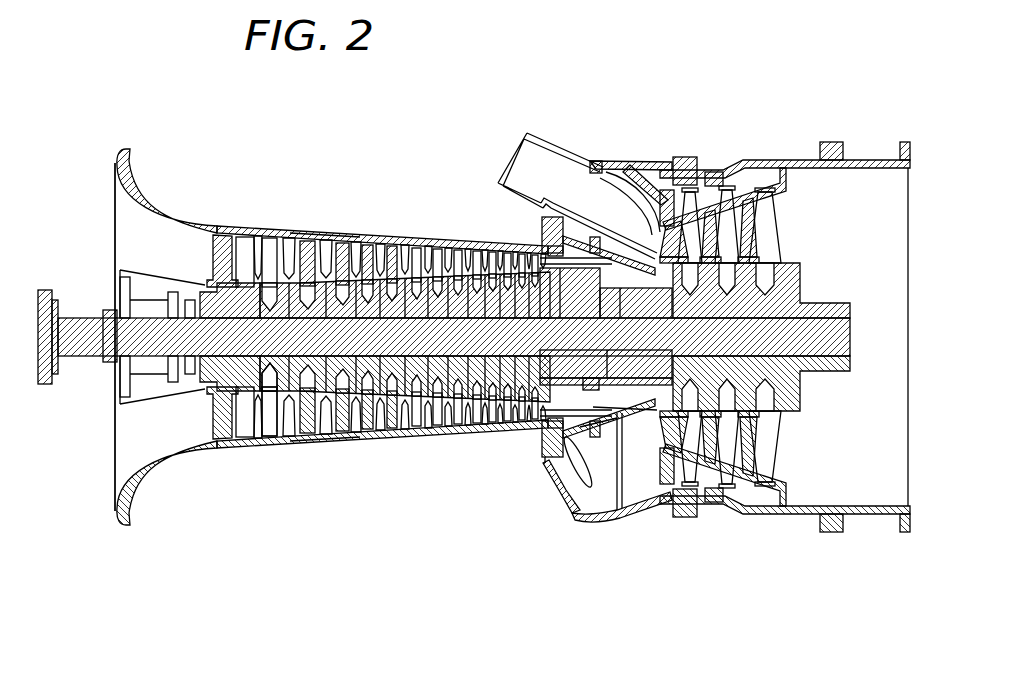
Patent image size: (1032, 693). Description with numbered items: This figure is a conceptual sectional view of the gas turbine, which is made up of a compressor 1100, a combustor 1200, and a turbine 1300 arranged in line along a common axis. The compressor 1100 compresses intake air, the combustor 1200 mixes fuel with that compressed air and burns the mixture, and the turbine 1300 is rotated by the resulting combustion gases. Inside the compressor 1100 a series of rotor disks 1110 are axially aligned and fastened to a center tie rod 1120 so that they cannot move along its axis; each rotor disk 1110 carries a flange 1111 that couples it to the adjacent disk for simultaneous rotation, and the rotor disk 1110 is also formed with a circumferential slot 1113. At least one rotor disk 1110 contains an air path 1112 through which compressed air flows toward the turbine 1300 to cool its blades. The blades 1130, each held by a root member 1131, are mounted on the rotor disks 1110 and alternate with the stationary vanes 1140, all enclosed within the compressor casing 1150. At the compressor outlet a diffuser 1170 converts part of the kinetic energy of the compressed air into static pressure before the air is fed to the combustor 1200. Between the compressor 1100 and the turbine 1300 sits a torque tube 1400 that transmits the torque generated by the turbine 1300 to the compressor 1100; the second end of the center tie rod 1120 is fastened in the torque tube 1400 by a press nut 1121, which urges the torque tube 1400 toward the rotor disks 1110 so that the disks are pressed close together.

The compressor 1100 is at (365, 452).
The rotor disk 1110 is at (275, 282).
The flange 1111 is at (250, 297).
The air path 1112 is at (272, 375).
The circumferential slot 1113 is at (278, 396).
The center tie rod 1120 is at (420, 430).
The press nut 1121 is at (590, 391).
The blade 1130 is at (290, 252).
The root member 1131 is at (300, 240).
The vane 1140 is at (302, 228).
The compressor casing 1150 is at (405, 227).
The diffuser 1170 is at (578, 233).
The combustor 1200 is at (535, 126).
The turbine 1300 is at (714, 400).
The torque tube 1400 is at (607, 386).